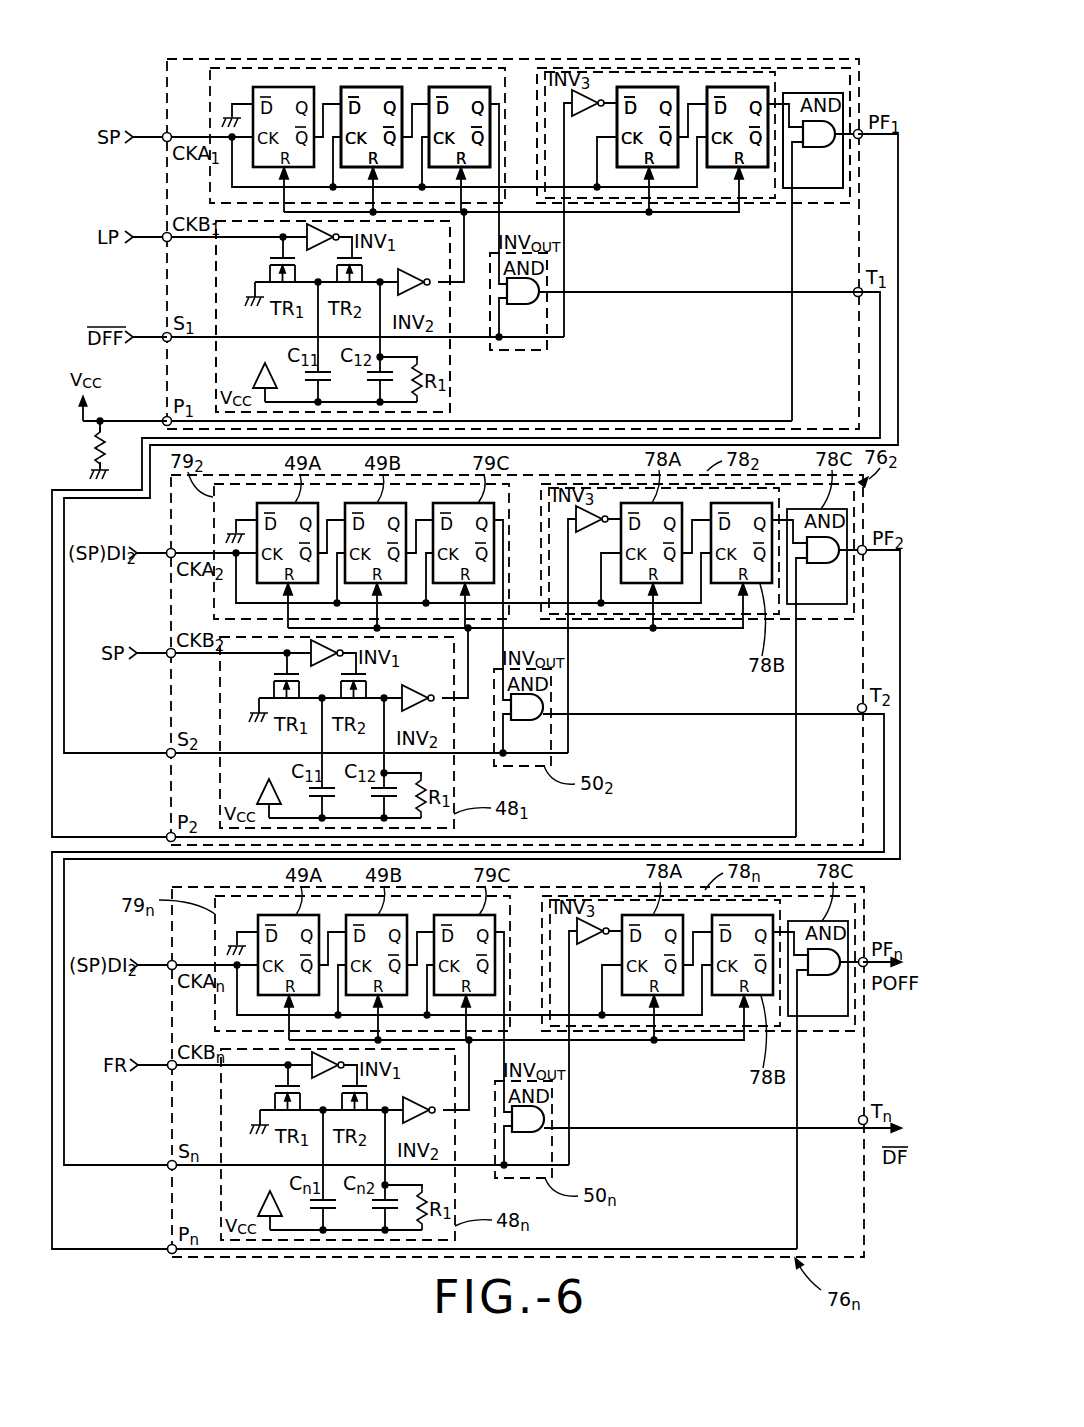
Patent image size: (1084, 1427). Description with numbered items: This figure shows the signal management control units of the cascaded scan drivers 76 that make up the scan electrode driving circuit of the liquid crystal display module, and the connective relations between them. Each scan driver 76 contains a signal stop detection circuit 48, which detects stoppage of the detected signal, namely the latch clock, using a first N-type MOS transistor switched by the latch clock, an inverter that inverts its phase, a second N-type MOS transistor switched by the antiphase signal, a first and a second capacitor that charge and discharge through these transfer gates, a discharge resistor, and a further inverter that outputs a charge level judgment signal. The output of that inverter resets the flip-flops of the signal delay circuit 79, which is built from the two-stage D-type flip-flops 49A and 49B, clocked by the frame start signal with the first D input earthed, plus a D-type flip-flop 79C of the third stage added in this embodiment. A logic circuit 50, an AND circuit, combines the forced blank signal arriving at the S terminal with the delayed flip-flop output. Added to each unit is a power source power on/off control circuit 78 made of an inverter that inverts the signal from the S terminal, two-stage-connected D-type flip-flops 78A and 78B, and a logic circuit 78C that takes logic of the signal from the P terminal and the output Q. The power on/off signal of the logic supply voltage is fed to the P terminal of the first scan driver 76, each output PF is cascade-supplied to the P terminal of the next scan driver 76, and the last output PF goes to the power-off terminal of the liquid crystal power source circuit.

The D-type flip-flop 49A is at (291, 87).
The D-type flip-flop 49B is at (373, 87).
The D-type flip-flop of the third stage 79C is at (474, 87).
The signal delay circuit 79 is at (418, 68).
The D-type flip-flop 78A is at (648, 87).
The D-type flip-flop 78B is at (733, 87).
The power source power on/off control circuit 78 is at (773, 68).
The logic circuit 78C is at (817, 93).
The scan driver 76 is at (863, 60).
The signal stop detection circuit 48 is at (450, 398).
The logic circuit 50 is at (540, 350).